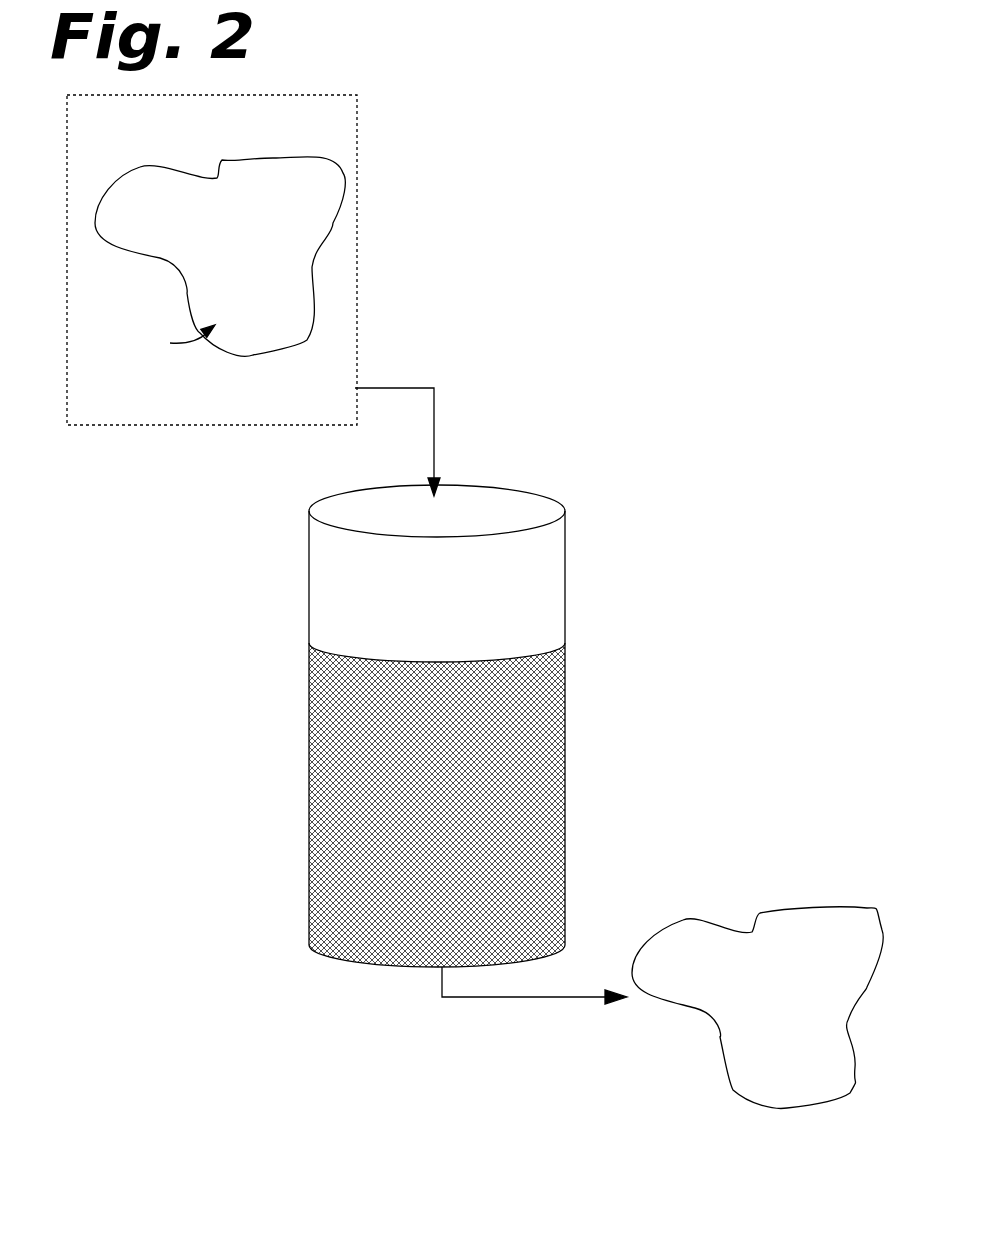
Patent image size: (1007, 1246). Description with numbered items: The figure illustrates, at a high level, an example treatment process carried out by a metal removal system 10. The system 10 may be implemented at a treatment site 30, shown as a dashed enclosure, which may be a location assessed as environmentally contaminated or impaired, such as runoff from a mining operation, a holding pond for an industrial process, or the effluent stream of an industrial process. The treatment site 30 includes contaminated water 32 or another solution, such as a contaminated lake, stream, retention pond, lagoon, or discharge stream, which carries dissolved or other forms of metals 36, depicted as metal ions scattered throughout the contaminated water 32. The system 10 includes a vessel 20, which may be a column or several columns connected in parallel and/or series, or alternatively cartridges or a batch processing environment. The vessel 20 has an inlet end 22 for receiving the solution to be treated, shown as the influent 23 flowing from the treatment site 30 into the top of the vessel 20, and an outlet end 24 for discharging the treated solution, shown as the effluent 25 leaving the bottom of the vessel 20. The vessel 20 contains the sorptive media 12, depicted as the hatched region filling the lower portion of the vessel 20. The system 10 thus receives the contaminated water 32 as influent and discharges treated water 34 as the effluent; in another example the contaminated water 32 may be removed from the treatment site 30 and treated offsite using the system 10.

The metal removal system 10 is at (612, 463).
The sorptive media 12 is at (528, 792).
The vessel 20 is at (338, 495).
The inlet end 22 is at (447, 523).
The influent 23 is at (390, 387).
The outlet end 24 is at (452, 959).
The effluent 25 is at (583, 1000).
The treatment site 30 is at (355, 140).
The contaminated water 32 is at (220, 167).
The treated water 34 is at (713, 927).
The metals 36 is at (176, 341).